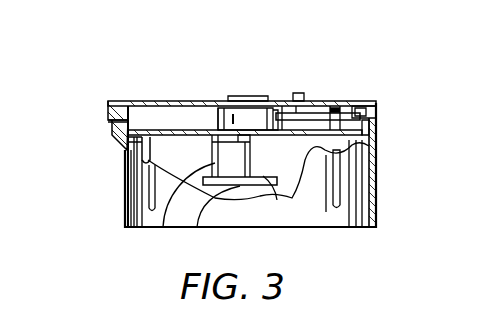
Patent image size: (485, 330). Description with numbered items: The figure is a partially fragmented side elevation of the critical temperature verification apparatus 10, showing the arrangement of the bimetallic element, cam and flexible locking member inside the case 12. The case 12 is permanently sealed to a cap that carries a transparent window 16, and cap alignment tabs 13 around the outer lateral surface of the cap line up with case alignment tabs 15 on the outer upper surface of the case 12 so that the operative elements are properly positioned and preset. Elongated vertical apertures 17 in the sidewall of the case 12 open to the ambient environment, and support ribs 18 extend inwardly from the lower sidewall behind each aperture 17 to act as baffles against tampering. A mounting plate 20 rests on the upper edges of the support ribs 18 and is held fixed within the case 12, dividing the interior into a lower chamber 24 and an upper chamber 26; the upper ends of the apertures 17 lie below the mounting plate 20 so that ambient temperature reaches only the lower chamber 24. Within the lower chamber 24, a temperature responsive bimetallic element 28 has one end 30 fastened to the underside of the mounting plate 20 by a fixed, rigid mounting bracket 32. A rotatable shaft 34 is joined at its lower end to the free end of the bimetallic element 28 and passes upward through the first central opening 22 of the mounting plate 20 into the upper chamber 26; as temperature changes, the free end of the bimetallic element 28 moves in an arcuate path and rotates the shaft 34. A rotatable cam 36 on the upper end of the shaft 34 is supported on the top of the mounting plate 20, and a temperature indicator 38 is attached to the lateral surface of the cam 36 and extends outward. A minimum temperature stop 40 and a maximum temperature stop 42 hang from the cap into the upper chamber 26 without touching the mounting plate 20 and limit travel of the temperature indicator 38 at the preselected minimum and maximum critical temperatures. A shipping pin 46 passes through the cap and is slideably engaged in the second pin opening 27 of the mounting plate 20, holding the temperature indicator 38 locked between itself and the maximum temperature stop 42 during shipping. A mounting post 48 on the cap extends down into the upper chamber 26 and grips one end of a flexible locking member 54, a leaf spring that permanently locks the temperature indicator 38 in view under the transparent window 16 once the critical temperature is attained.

The critical temperature verification apparatus 10 is at (116, 170).
The case 12 is at (373, 211).
The cap alignment tabs 13 is at (110, 101).
The case alignment tabs 15 is at (110, 128).
The transparent window 16 is at (246, 96).
The apertures 17 is at (126, 188).
The support ribs 18 is at (126, 142).
The mounting plate 20 is at (160, 101).
The first central opening 22 is at (273, 110).
The lower chamber 24 is at (288, 175).
The upper chamber 26 is at (132, 101).
The second pin opening 27 is at (258, 171).
The temperature responsive bimetallic element 28 is at (240, 186).
The end of bimetallic element 30 is at (197, 227).
The mounting bracket 32 is at (163, 227).
The rotatable shaft 34 is at (263, 176).
The rotatable cam 36 is at (222, 126).
The temperature indicator 38 is at (320, 113).
The minimum temperature stop 40 is at (228, 105).
The maximum temperature stop 42 is at (337, 106).
The shipping pin 46 is at (298, 93).
The mounting post 48 is at (354, 104).
The flexible locking member 54 is at (372, 122).